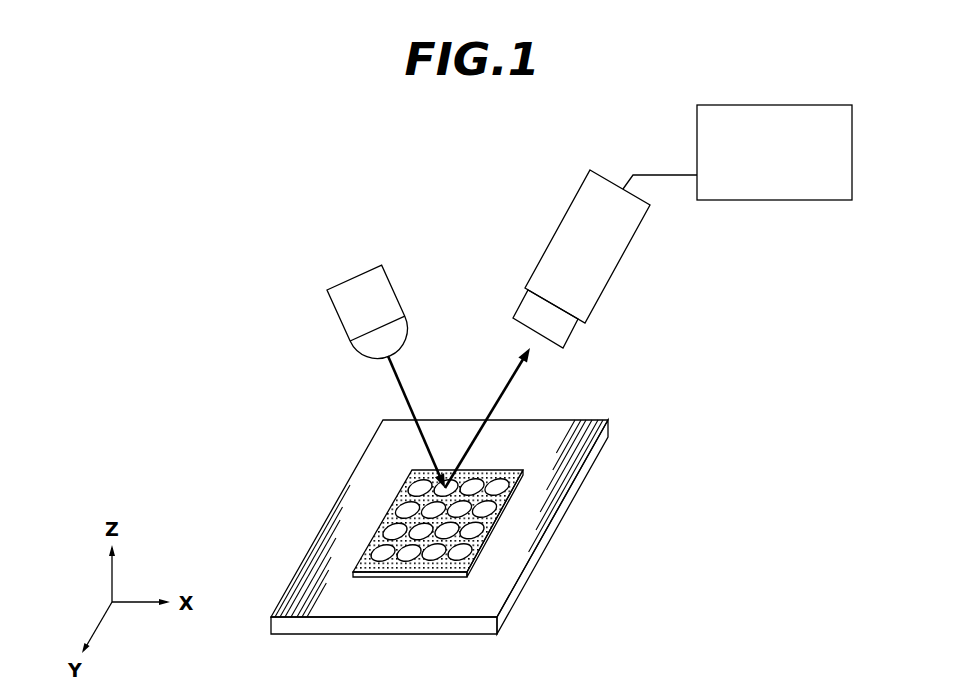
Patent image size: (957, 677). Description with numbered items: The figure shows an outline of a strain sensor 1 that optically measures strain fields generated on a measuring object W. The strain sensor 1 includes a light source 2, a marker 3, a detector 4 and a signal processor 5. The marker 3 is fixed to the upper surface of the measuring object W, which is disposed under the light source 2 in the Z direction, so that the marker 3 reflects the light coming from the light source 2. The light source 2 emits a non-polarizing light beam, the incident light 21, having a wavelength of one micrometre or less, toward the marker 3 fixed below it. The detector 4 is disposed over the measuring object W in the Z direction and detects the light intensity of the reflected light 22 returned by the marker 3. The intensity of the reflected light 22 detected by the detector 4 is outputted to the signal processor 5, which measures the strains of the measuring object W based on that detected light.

The strain sensor 1 is at (440, 202).
The light source 2 is at (343, 315).
The incident light 21 is at (395, 377).
The reflected light 22 is at (518, 378).
The marker 3 is at (487, 522).
The detector 4 is at (600, 272).
The signal processor 5 is at (782, 118).
The measuring object W is at (503, 583).